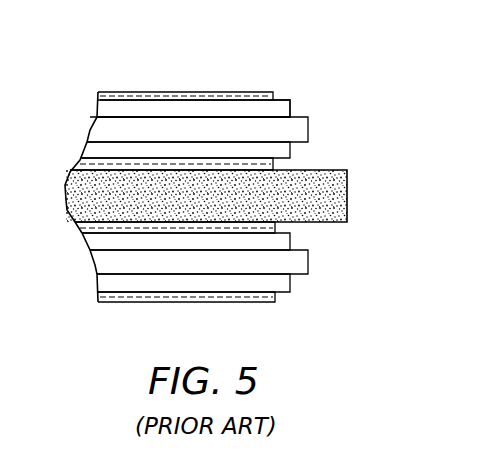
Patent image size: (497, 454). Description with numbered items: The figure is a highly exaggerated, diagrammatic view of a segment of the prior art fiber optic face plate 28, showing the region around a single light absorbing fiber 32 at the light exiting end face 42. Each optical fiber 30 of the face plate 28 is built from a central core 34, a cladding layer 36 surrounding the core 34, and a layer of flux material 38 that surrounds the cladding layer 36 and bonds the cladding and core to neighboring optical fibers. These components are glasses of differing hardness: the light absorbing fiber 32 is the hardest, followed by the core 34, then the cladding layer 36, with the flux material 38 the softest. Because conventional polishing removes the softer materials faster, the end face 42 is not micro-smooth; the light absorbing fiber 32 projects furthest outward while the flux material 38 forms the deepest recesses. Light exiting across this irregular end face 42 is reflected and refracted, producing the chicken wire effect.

The fiber optic face plate 28 is at (160, 92).
The optical fiber 30 is at (132, 111).
The light exiting end face 42 is at (305, 118).
The light absorbing fiber 32 is at (347, 187).
The core 34 is at (310, 263).
The cladding layer 36 is at (286, 283).
The flux material 38 is at (252, 302).